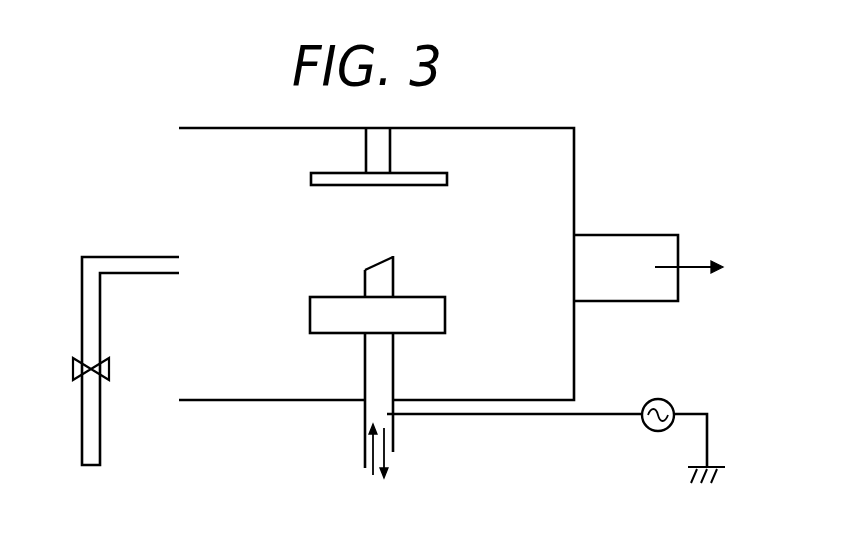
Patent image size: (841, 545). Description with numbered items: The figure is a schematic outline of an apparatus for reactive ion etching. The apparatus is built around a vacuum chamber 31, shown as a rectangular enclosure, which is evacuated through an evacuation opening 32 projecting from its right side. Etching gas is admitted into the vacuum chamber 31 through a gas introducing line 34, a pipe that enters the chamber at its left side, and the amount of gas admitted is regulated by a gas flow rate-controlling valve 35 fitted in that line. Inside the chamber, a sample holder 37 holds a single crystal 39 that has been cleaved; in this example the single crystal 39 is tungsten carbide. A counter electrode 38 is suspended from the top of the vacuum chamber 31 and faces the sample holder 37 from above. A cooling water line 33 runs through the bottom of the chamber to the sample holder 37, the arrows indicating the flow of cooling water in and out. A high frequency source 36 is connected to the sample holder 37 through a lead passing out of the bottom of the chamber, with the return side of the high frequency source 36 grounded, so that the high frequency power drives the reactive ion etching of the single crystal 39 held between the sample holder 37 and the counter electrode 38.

The vacuum chamber 31 is at (575, 147).
The evacuation opening 32 is at (654, 235).
The cooling water line 33 is at (394, 452).
The gas introducing line 34 is at (83, 352).
The gas flow rate-controlling valve 35 is at (108, 358).
The high frequency source 36 is at (658, 398).
The sample holder 37 is at (335, 335).
The counter electrode 38 is at (428, 173).
The single crystal 39 is at (373, 268).